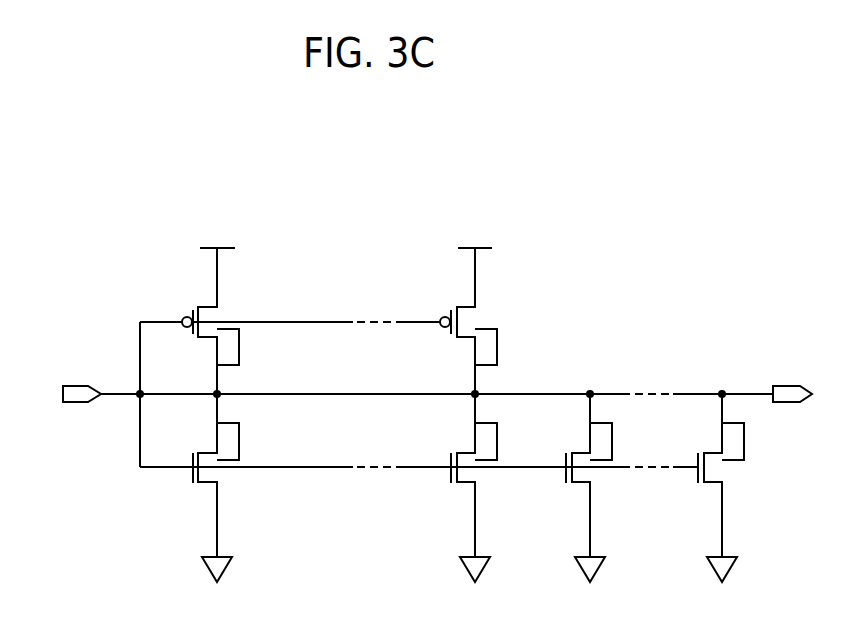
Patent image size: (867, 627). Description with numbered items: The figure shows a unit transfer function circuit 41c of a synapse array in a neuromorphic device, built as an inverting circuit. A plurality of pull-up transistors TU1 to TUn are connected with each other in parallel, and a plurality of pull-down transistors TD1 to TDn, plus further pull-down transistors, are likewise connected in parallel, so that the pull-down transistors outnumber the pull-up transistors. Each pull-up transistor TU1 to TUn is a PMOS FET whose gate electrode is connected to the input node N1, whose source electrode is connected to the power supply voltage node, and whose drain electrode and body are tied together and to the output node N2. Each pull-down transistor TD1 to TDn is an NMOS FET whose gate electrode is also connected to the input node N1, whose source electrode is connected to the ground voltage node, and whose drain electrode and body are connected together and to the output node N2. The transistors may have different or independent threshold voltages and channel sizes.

The unit transfer function circuit 41c is at (406, 176).
The pull-up transistor TU1 is at (185, 288).
The pull-up transistor TUn is at (442, 288).
The pull-down transistor TD1 is at (185, 490).
The pull-down transistor TDn is at (449, 490).
The input node N1 is at (76, 379).
The output node N2 is at (795, 380).